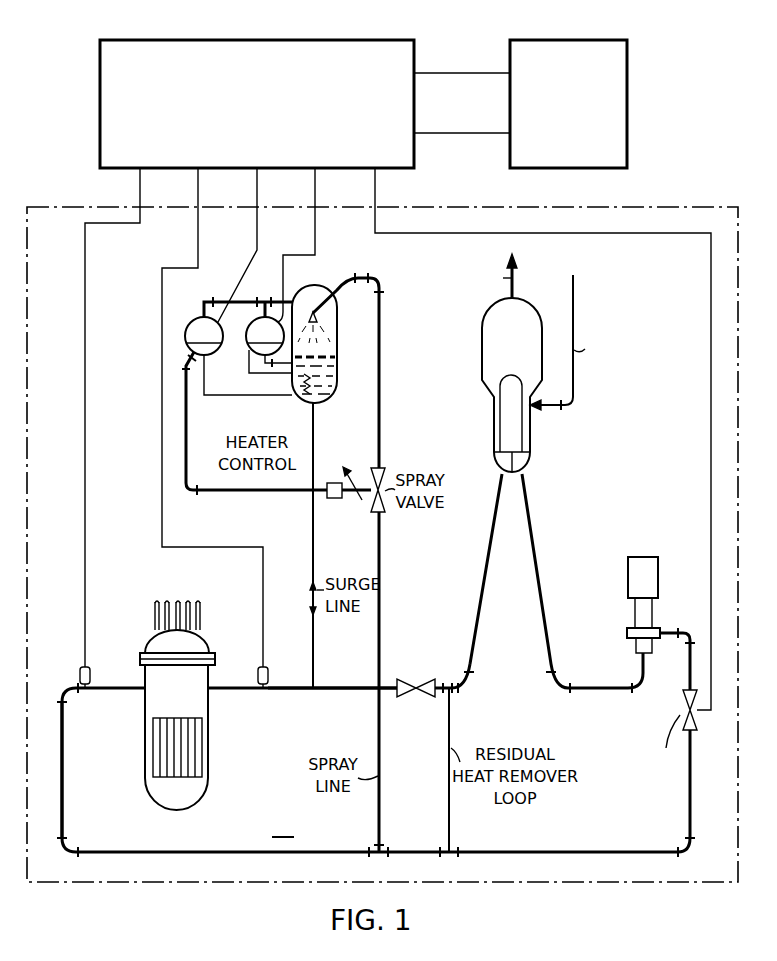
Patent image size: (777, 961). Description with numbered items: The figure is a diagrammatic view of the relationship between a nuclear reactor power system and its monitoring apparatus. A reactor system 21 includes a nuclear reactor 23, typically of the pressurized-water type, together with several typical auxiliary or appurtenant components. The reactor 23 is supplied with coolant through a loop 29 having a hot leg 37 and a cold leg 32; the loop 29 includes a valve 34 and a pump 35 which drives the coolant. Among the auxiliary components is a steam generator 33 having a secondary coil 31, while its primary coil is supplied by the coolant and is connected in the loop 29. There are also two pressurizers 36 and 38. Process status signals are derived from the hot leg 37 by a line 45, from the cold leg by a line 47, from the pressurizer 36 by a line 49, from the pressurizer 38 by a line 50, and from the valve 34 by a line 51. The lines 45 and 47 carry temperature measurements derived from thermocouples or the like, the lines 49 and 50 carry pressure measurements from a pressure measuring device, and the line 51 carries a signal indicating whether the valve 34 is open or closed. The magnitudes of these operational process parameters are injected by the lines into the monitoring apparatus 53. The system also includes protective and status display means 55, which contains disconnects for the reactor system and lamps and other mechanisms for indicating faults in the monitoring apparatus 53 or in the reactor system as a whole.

The reactor system 21 is at (676, 207).
The nuclear reactor 23 is at (197, 797).
The loop 29 is at (376, 742).
The secondary coil 31 is at (500, 420).
The cold leg 32 is at (63, 752).
The steam generator 33 is at (559, 468).
The valve 34 is at (686, 712).
The pump 35 is at (628, 583).
The pressurizer 36 is at (193, 322).
The hot leg 37 is at (343, 690).
The pressurizer 38 is at (250, 347).
The line 45 is at (199, 222).
The line 47 is at (86, 265).
The line 49 is at (258, 222).
The line 50 is at (316, 228).
The line 51 is at (432, 233).
The monitoring apparatus 53 is at (268, 147).
The protective and status display means 55 is at (575, 40).